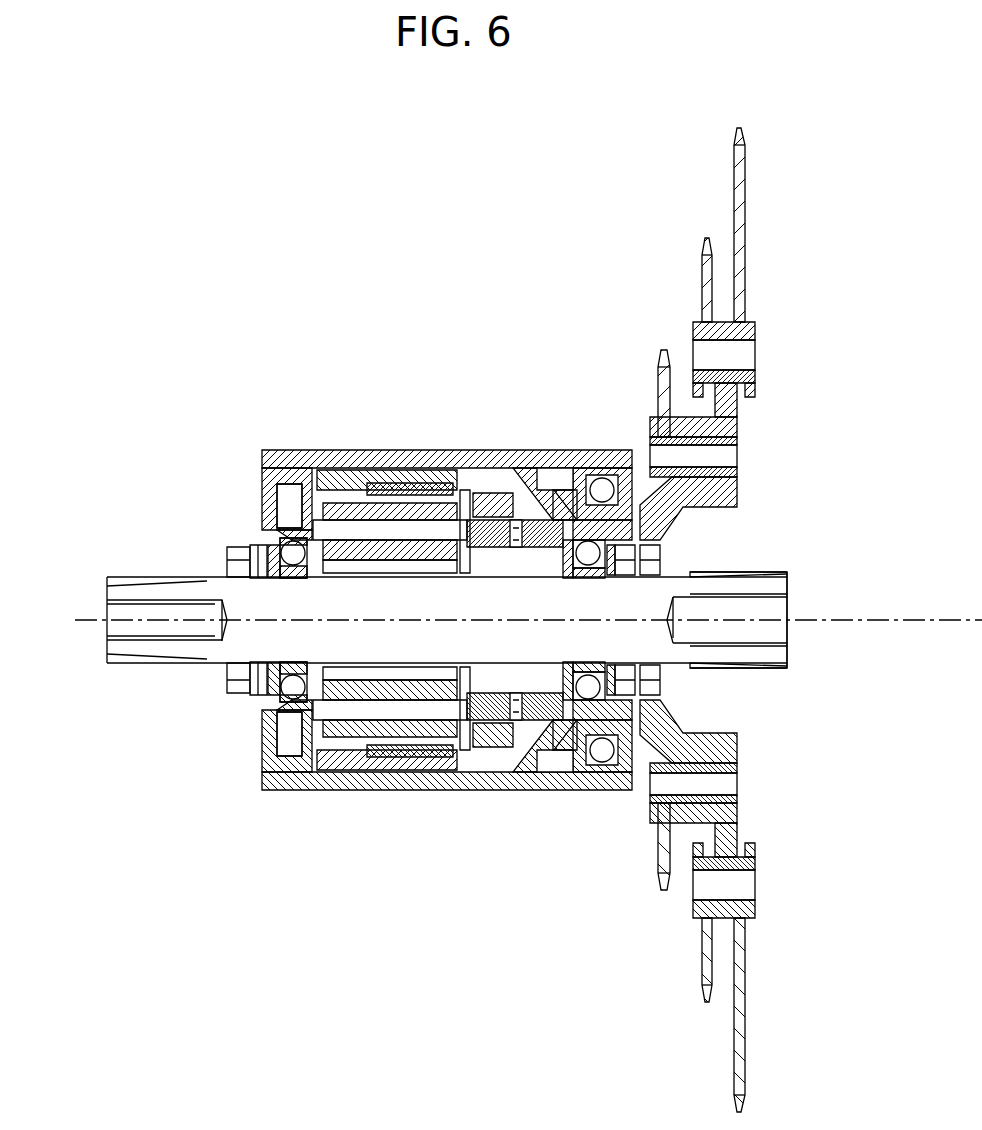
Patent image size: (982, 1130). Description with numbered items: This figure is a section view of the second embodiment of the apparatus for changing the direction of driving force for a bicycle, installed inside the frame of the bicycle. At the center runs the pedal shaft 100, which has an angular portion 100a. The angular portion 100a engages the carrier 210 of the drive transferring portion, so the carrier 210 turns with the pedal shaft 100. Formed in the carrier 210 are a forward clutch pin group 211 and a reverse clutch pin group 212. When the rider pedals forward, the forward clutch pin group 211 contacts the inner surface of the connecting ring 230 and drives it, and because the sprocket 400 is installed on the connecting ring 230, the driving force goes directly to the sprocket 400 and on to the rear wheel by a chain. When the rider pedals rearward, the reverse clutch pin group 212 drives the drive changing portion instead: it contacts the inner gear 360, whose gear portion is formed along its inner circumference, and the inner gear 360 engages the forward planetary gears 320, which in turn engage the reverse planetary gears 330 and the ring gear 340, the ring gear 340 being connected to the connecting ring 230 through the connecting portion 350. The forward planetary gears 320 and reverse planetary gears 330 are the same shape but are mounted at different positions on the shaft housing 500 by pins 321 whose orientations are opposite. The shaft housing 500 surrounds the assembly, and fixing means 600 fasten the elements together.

The pedal shaft 100 is at (225, 577).
The angular portion 100a is at (670, 572).
The carrier 210 is at (518, 717).
The forward clutch pin group 211 is at (547, 740).
The reverse clutch pin group 212 is at (495, 713).
The connecting ring 230 is at (553, 470).
The forward planetary gears 320 is at (402, 733).
The pins 321 is at (275, 530).
The reverse planetary gears 330 is at (343, 752).
The ring gear 340 is at (387, 470).
The connecting portion 350 is at (455, 483).
The inner gear 360 is at (497, 493).
The sprocket 400 is at (762, 437).
The shaft housing 500 is at (330, 455).
The fixing means 600 is at (226, 688).